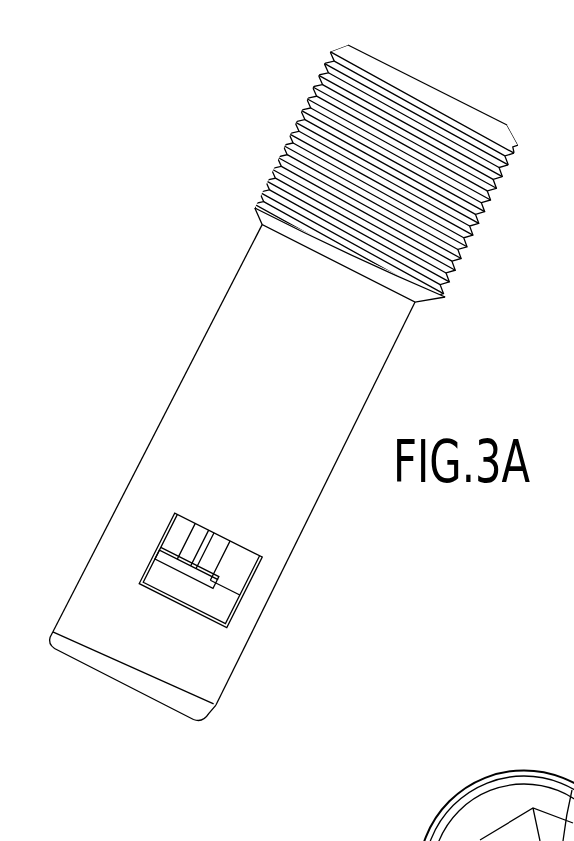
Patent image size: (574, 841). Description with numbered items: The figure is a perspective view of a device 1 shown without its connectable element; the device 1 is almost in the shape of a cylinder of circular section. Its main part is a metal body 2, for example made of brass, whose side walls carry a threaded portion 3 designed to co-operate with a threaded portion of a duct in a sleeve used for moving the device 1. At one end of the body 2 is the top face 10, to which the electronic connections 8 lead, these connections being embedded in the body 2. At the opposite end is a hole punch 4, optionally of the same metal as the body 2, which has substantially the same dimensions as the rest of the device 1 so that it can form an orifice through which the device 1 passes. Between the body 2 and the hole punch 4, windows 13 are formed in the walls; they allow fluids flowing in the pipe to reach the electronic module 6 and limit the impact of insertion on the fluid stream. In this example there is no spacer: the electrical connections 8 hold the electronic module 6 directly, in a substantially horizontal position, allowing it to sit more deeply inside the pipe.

The device 1 is at (108, 306).
The body 2 is at (377, 359).
The threaded portion 3 is at (300, 112).
The hole punch 4 is at (206, 732).
The electronic module 6 is at (188, 569).
The electronic connections 8 is at (212, 542).
The top face 10 is at (383, 61).
The windows 13 is at (155, 573).